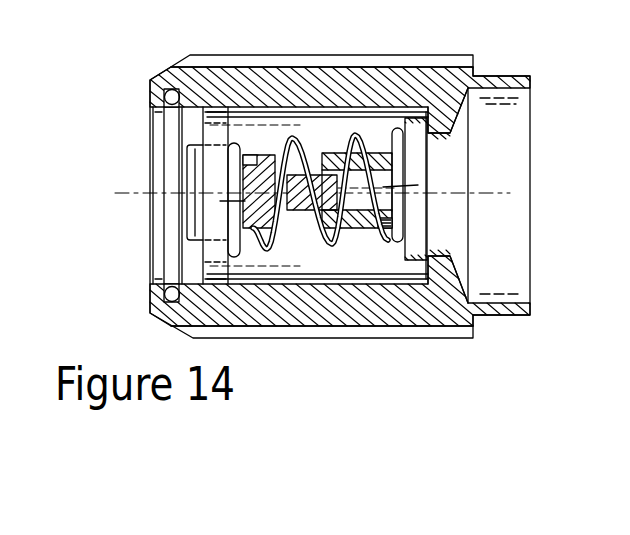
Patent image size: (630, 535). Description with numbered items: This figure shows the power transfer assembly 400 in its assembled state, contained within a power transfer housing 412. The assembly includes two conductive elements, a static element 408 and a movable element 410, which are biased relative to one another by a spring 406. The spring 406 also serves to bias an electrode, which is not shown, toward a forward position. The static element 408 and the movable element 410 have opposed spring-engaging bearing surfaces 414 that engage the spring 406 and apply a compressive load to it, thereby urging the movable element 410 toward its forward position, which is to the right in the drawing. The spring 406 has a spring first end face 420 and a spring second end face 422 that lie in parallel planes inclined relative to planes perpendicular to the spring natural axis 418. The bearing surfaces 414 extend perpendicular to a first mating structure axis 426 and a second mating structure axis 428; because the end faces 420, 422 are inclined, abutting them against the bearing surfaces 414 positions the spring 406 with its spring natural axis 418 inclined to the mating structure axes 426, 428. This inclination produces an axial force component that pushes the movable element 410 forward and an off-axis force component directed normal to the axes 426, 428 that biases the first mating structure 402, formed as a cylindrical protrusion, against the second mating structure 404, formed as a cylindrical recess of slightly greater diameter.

The power transfer assembly 400 is at (136, 71).
The first mating structure 402 is at (299, 211).
The second mating structure 404 is at (368, 208).
The spring 406 is at (312, 136).
The static element 408 is at (185, 151).
The movable element 410 is at (440, 157).
The power transfer housing 412 is at (445, 85).
The spring-engaging bearing surfaces 414 is at (242, 141).
The spring natural axis 418 is at (408, 183).
The spring first end face 420 is at (227, 210).
The spring second end face 422 is at (403, 215).
The first mating structure axis 426 is at (158, 192).
The second mating structure axis 428 is at (457, 193).